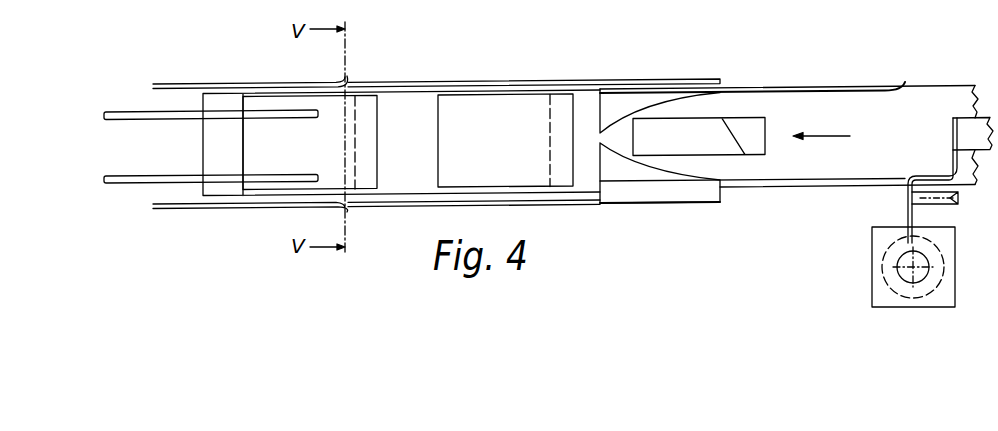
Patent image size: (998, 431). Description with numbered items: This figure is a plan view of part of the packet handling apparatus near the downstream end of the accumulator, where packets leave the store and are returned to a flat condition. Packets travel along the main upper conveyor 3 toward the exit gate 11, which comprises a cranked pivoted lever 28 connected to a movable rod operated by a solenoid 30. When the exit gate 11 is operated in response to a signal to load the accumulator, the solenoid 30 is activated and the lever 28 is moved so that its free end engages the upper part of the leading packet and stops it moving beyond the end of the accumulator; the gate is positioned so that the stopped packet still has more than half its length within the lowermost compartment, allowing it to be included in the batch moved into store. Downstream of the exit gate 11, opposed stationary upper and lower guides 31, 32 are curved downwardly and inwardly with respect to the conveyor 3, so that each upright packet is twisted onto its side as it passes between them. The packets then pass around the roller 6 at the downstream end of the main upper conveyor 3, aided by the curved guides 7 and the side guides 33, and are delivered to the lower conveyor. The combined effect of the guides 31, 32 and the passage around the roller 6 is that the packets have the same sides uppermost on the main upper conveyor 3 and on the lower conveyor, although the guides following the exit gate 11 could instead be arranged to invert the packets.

The main upper conveyor 3 is at (912, 105).
The roller 6 is at (222, 98).
The curved guides 7 is at (129, 110).
The exit gate 11 is at (862, 221).
The cranked pivoted lever 28 is at (905, 190).
The solenoid 30 is at (877, 283).
The upper guide 31 is at (622, 167).
The lower guide 32 is at (627, 105).
The side guides 33 is at (275, 82).